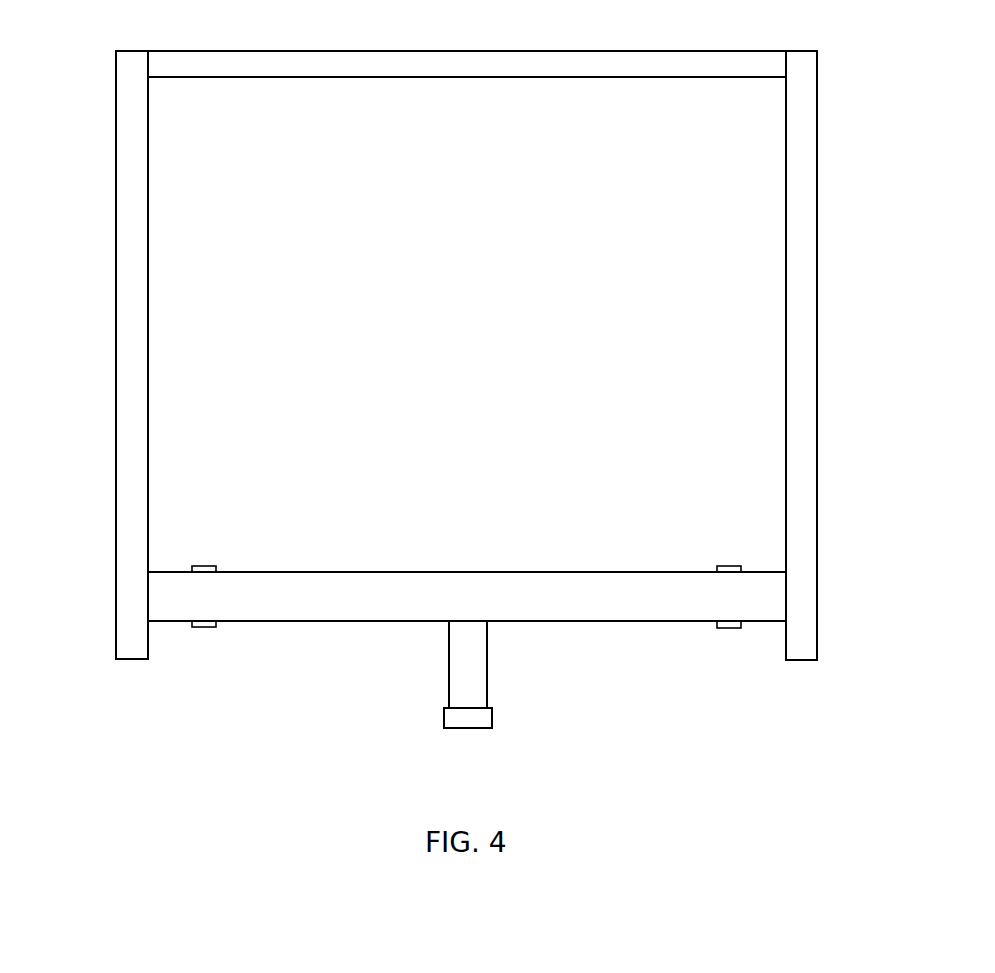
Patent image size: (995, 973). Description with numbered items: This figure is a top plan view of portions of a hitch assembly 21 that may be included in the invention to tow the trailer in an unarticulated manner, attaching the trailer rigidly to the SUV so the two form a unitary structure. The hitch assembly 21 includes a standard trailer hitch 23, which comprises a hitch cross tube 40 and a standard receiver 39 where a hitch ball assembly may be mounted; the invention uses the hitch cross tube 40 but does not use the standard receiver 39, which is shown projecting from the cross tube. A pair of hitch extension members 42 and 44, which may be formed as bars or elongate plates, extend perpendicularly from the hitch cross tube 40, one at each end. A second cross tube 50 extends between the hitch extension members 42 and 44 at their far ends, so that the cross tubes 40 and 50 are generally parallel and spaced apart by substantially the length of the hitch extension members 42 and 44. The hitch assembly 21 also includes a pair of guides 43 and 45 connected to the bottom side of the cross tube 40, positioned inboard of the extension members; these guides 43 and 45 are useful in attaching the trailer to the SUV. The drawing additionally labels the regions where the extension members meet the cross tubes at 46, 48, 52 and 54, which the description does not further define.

The hitch assembly 21 is at (370, 731).
The standard trailer hitch 23 is at (655, 623).
The standard receiver 39 is at (487, 672).
The hitch cross tube 40 is at (371, 572).
The hitch extension member 42 is at (148, 370).
The guide 43 is at (204, 566).
The hitch extension member 44 is at (786, 400).
The guide 45 is at (729, 566).
The left leg lower joint 46 is at (146, 600).
The right leg lower joint 48 is at (786, 588).
The second cross tube 50 is at (519, 77).
The left upper joint 52 is at (156, 77).
The right upper joint 54 is at (775, 77).